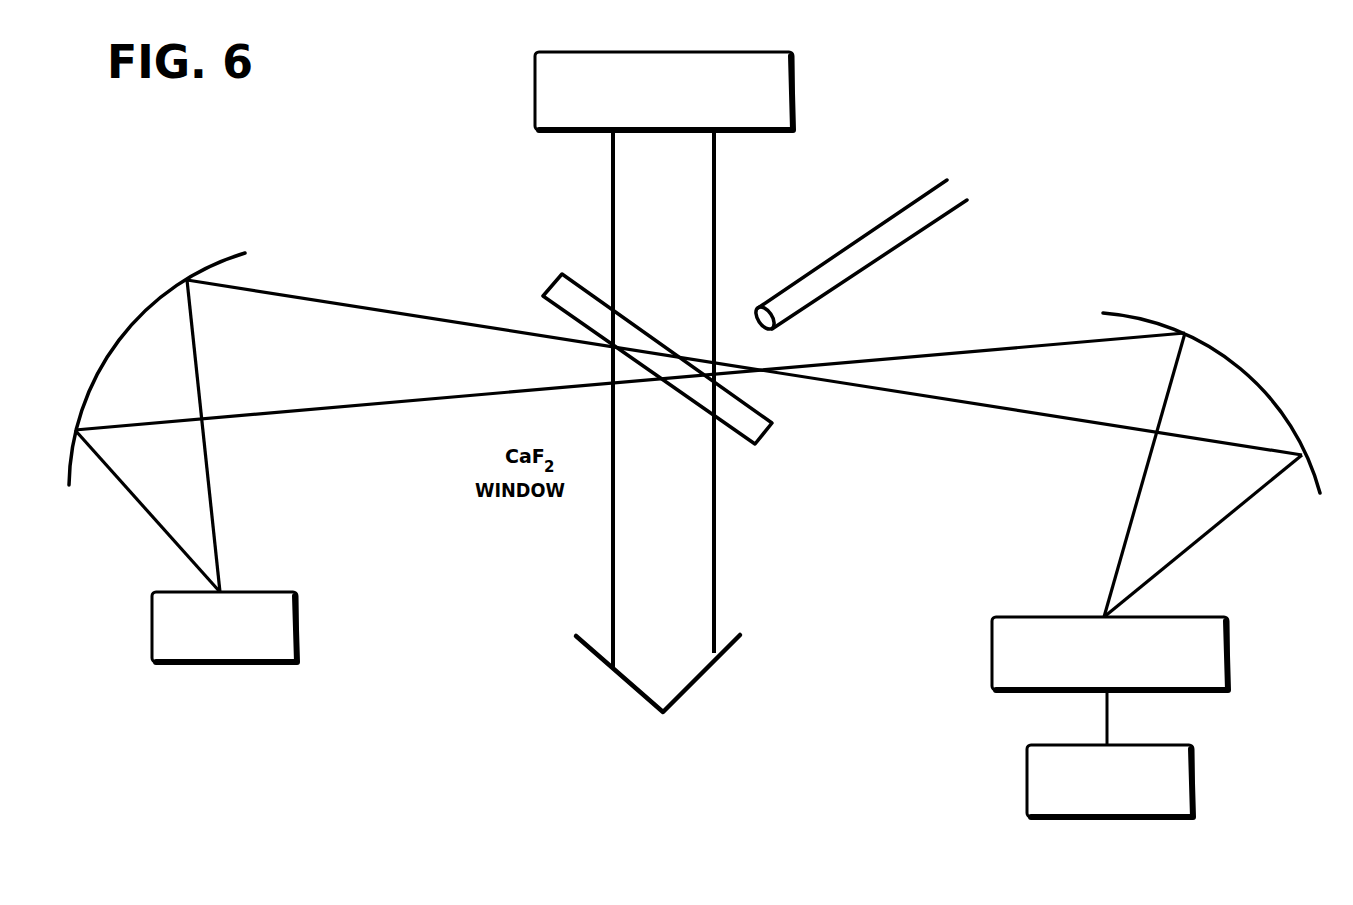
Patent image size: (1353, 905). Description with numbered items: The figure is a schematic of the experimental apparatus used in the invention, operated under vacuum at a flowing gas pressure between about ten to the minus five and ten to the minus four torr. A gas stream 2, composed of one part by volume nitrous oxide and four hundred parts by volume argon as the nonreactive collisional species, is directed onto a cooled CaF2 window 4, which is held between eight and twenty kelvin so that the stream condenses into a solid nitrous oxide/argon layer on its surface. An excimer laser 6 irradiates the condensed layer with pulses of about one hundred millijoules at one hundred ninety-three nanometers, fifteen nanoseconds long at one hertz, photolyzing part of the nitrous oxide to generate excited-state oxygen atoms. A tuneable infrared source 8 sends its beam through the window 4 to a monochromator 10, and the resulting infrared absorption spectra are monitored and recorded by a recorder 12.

The gas stream 2 is at (876, 236).
The CaF2 window 4 is at (660, 390).
The excimer laser 6 is at (541, 77).
The tuneable infrared source 8 is at (253, 590).
The monochromator 10 is at (1180, 623).
The recorder 12 is at (1152, 754).